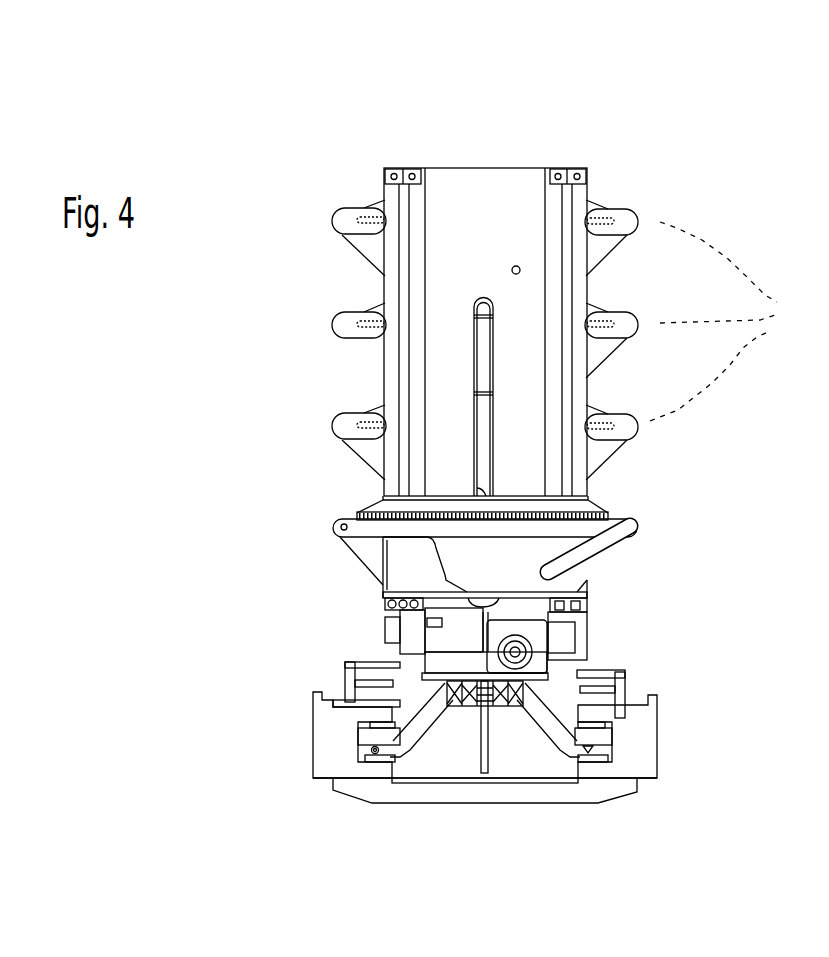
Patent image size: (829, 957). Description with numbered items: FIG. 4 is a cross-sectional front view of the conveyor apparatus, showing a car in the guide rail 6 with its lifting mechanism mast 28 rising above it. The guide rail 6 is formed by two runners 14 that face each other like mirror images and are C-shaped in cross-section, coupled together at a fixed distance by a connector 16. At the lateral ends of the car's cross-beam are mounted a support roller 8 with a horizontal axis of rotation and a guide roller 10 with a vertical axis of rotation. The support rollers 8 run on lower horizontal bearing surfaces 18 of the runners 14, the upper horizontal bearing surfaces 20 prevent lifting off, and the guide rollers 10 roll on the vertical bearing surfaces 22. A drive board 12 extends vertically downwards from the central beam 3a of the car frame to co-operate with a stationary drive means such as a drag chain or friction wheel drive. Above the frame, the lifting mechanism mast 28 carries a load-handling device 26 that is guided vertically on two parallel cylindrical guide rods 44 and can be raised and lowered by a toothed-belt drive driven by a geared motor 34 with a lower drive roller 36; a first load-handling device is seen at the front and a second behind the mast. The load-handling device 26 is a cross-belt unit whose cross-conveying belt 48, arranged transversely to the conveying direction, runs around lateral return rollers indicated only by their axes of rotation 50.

The lifting mechanism mast 28 is at (520, 157).
The guide rods 44 is at (402, 198).
The cross-conveying belt 48 is at (357, 412).
The load-handling device 26 is at (660, 519).
The axes of rotation 50 is at (338, 532).
The guide rail 6 is at (665, 665).
The geared motor 34 is at (398, 634).
The central beam 3a is at (470, 706).
The drive board 12 is at (490, 745).
The lower drive roller 36 is at (423, 735).
The upper horizontal bearing surfaces 20 is at (602, 718).
The runners 14 is at (316, 738).
The vertical bearing surfaces 22 is at (350, 752).
The lower horizontal bearing surfaces 18 is at (367, 770).
The guide roller 10 is at (600, 737).
The connector 16 is at (555, 795).
The support roller 8 is at (605, 762).